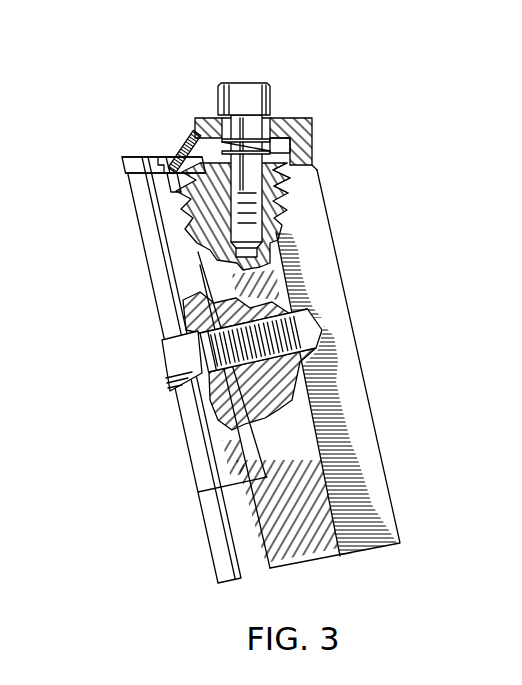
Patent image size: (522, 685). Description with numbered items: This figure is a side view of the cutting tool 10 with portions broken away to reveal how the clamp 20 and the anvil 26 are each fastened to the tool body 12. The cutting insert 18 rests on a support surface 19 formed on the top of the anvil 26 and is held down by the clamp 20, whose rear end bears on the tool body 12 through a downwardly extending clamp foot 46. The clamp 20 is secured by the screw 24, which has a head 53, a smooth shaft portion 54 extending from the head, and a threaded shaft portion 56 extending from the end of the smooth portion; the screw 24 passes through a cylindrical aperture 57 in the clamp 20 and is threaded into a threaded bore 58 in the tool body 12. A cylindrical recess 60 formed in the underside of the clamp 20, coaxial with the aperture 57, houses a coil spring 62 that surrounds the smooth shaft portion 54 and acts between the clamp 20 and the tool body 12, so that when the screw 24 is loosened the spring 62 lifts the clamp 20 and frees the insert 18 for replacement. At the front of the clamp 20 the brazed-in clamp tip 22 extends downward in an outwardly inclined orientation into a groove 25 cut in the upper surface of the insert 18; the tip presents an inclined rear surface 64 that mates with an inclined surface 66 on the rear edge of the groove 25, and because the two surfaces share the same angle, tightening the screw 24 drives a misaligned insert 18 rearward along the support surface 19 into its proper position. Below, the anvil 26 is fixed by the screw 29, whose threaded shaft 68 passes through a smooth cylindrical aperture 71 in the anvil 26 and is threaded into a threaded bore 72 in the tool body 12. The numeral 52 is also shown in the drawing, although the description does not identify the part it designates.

The cutting tool 10 is at (116, 99).
The tool body 12 is at (336, 247).
The cutting insert 18 is at (116, 141).
The support surface 19 is at (125, 167).
The clamp 20 is at (326, 107).
The clamp tip 22 is at (167, 157).
The screw 24 is at (302, 136).
The groove 25 is at (165, 180).
The anvil 26 is at (162, 284).
The screw 29 is at (162, 347).
The clamp foot 46 is at (313, 146).
The set screw tip 52 is at (173, 187).
The head 53 is at (247, 83).
The smooth shaft portion 54 is at (317, 166).
The threaded shaft portion 56 is at (290, 185).
The cylindrical aperture 57 is at (254, 132).
The threaded bore 58 is at (293, 211).
The cylindrical recess 60 is at (197, 118).
The coil spring 62 is at (301, 149).
The inclined rear surface 64 is at (142, 160).
The inclined surface 66 is at (170, 155).
The threaded shaft 68 is at (244, 352).
The smooth cylindrical aperture 71 is at (210, 306).
The threaded bore 72 is at (281, 398).